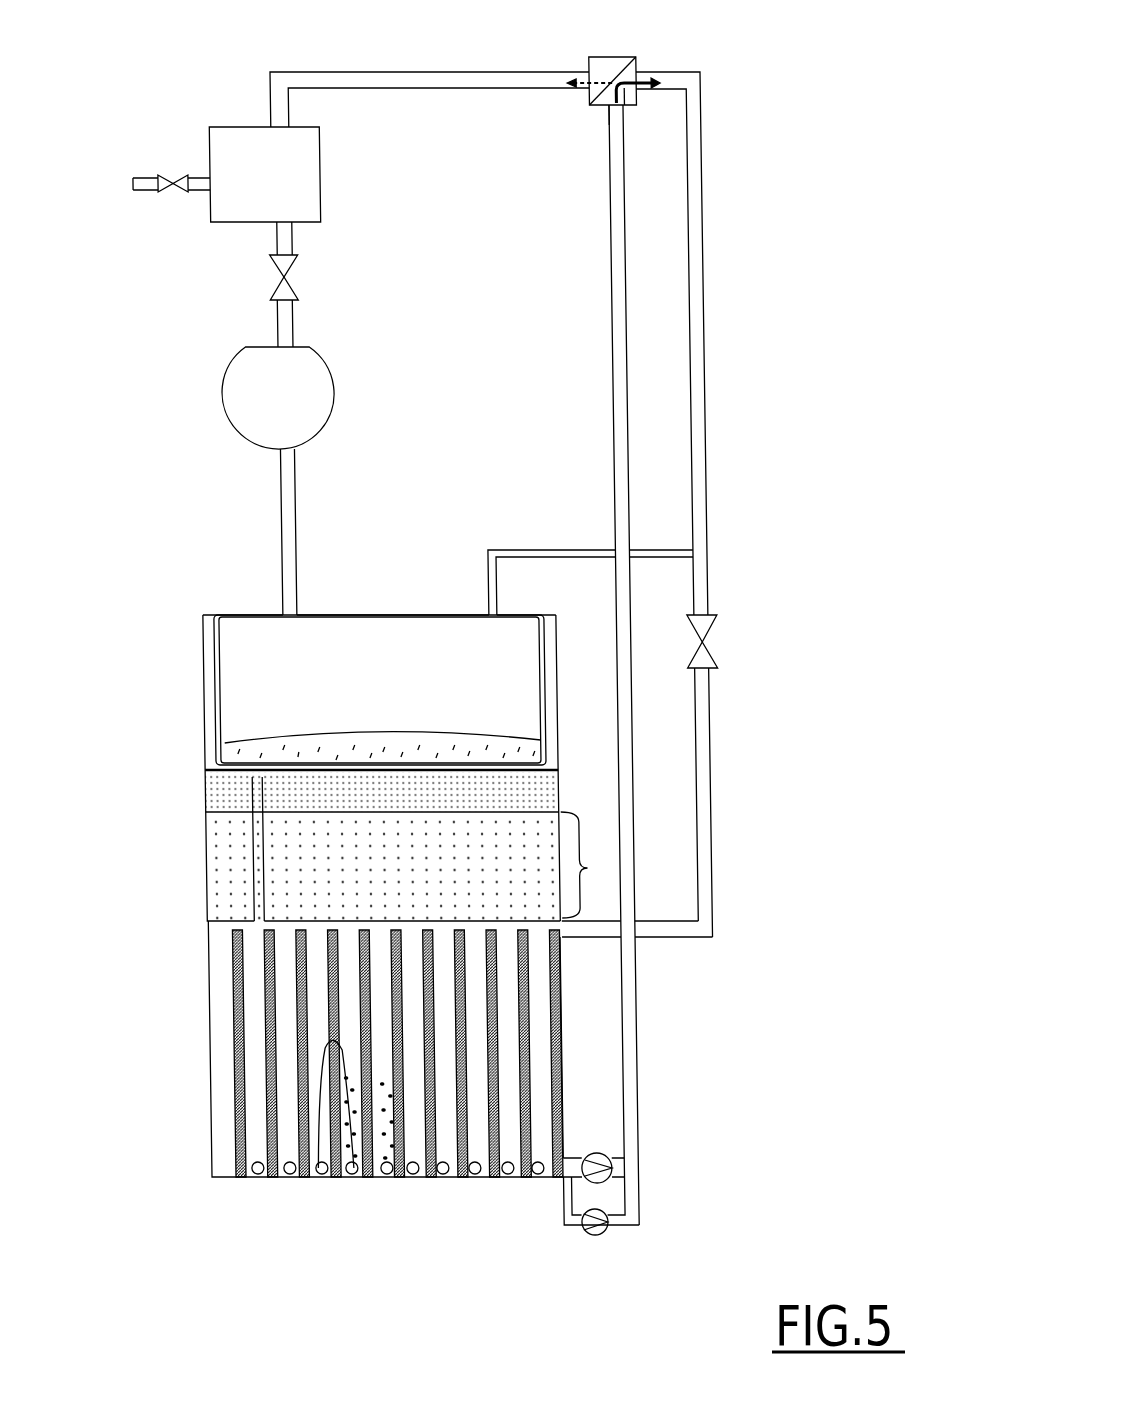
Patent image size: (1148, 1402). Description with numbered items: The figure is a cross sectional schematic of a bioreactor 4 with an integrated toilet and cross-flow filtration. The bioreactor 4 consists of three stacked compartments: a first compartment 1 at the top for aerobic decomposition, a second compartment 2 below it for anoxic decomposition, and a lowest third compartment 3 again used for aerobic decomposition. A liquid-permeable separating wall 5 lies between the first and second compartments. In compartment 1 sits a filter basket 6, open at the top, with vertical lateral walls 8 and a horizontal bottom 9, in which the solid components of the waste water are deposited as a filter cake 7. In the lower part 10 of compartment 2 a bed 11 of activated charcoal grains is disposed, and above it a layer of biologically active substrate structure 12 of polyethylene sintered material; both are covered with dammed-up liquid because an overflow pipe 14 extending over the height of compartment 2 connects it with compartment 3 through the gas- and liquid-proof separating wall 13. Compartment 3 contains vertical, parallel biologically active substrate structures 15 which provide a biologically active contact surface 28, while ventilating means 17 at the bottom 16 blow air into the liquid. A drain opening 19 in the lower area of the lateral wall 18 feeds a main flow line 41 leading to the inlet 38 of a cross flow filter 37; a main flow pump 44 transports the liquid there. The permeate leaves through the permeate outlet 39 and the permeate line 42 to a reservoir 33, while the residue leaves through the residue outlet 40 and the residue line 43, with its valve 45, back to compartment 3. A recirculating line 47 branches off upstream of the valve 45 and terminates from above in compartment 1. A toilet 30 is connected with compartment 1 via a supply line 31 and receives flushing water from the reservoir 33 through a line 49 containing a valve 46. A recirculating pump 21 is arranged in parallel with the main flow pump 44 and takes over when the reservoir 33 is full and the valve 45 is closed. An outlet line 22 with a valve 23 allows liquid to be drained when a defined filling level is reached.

The first compartment 1 is at (193, 770).
The second compartment 2 is at (191, 770).
The third compartment 3 is at (200, 1178).
The bioreactor 4 is at (201, 1197).
The separating wall 5 is at (552, 760).
The filter basket 6 is at (227, 662).
The filter cake 7 is at (389, 743).
The lateral walls 8 is at (546, 650).
The bottom 9 is at (349, 765).
The lower part 10 is at (590, 868).
The bed of activated charcoal grains 11 is at (476, 860).
The biologically active substrate structure 12 is at (505, 798).
The separating wall 13 is at (435, 921).
The overflow pipe 14 is at (259, 837).
The biologically active substrate structures 15 is at (303, 1180).
The bottom 16 is at (249, 1182).
The ventilating means 17 is at (504, 1182).
The lateral wall 18 is at (564, 995).
The drain opening 19 is at (568, 1165).
The recirculating pump 21 is at (585, 1237).
The outlet line 22 is at (150, 178).
The valve 23 is at (190, 176).
The biologically active contact surface 28 is at (349, 1182).
The toilet 30 is at (260, 381).
The supply line 31 is at (291, 472).
The reservoir 33 is at (331, 180).
The cross flow filter 37 is at (640, 95).
The inlet 38 is at (626, 112).
The permeate outlet 39 is at (601, 72).
The residue outlet 40 is at (650, 74).
The main flow line 41 is at (622, 270).
The permeate line 42 is at (462, 90).
The residue line 43 is at (709, 265).
The main flow pump 44 is at (596, 1156).
The valve 45 is at (709, 625).
The valve 46 is at (291, 277).
The recirculating line 47 is at (553, 550).
The line 49 is at (293, 320).